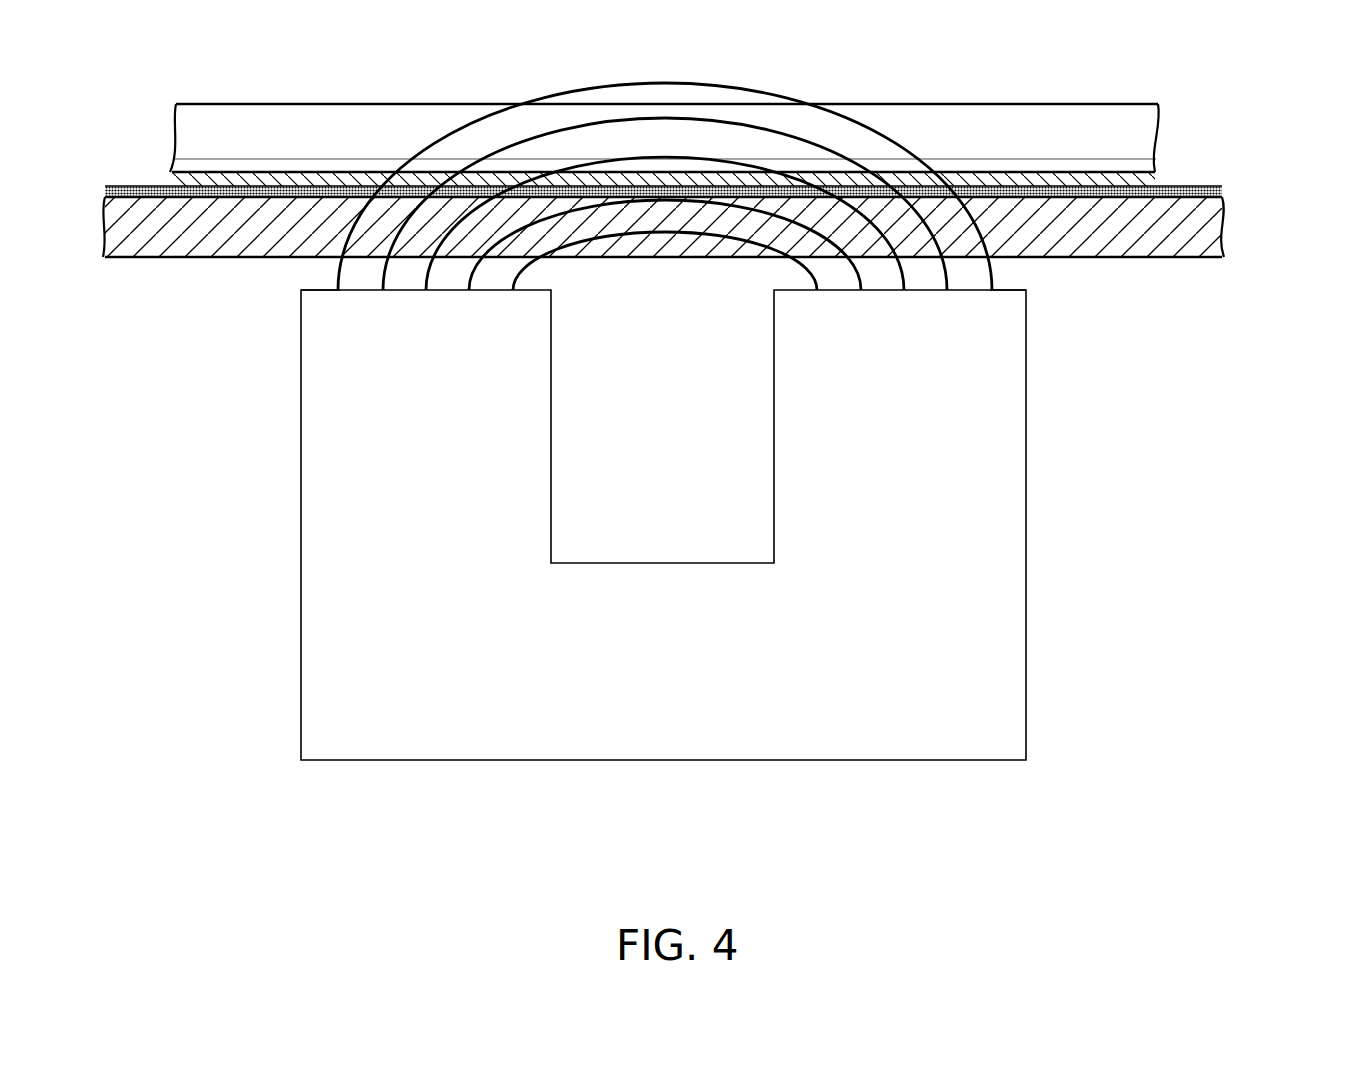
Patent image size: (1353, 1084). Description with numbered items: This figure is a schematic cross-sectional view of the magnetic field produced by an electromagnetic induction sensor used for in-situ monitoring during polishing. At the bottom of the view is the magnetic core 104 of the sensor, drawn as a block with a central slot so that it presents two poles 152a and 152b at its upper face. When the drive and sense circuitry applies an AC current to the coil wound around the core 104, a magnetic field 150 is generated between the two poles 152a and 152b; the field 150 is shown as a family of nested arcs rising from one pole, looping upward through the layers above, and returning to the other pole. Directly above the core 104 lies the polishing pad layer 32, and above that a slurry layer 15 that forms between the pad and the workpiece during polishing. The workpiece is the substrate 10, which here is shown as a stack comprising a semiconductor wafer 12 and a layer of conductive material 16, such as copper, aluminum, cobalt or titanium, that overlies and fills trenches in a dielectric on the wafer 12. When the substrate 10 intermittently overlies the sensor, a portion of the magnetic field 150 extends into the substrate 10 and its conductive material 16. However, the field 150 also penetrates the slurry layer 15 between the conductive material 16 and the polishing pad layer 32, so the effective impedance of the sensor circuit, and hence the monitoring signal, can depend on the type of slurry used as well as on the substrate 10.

The substrate 10 is at (703, 143).
The semiconductor wafer 12 is at (1152, 133).
The slurry layer 15 is at (1222, 193).
The conductive material 16 is at (1150, 184).
The polishing pad layer 32 is at (1225, 222).
The magnetic core 104 is at (1012, 518).
The magnetic field 150 is at (682, 83).
The pole 152a is at (1013, 290).
The pole 152b is at (320, 291).